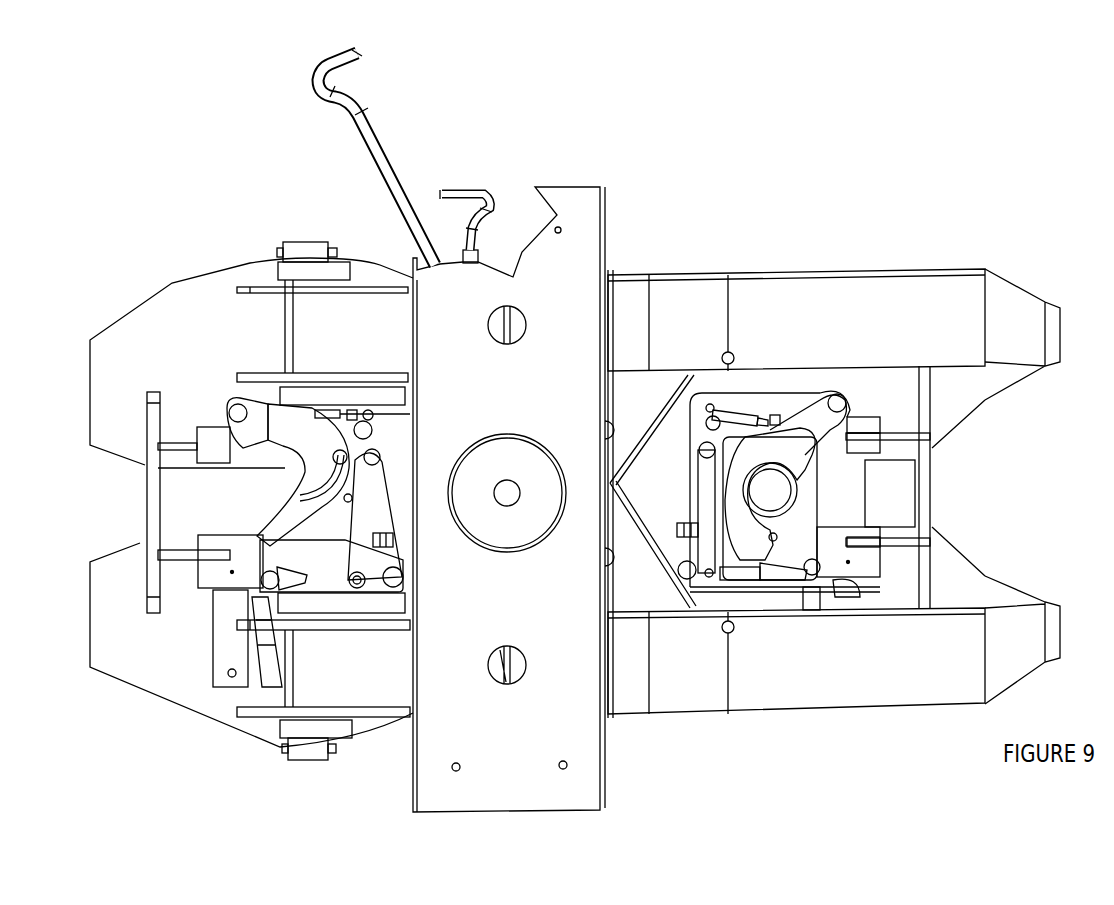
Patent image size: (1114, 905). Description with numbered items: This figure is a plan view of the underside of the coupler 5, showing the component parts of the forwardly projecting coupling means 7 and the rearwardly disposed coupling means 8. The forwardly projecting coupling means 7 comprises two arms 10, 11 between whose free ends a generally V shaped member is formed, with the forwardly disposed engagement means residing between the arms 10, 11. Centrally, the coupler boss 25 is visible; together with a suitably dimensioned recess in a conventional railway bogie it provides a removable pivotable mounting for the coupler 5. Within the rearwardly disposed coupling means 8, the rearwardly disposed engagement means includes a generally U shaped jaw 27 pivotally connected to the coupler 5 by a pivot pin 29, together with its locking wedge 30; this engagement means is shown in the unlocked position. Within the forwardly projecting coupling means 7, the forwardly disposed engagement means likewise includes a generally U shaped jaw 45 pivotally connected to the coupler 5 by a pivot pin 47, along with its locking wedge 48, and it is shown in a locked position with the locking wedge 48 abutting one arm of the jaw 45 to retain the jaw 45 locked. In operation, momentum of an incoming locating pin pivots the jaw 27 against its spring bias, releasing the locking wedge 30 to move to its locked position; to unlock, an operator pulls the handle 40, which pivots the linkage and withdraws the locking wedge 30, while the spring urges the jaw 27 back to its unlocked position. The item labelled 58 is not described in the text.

The coupler 5 is at (632, 725).
The forwardly projecting coupling means 7 is at (938, 232).
The rearwardly disposed coupling means 8 is at (170, 312).
The arm 10 is at (890, 650).
The arm 11 is at (862, 312).
The coupler boss 25 is at (551, 446).
The generally U shaped jaw 27 is at (280, 492).
The pivot pin 29 is at (333, 437).
The locking wedge 30 is at (210, 628).
The handle 40 is at (481, 230).
The generally U shaped jaw 45 is at (770, 492).
The pivot pin 47 is at (738, 437).
The locking wedge 48 is at (875, 487).
The handle 58 is at (375, 122).